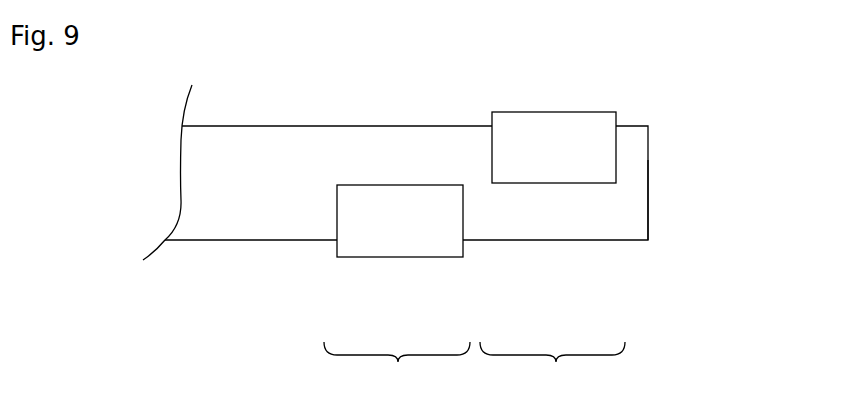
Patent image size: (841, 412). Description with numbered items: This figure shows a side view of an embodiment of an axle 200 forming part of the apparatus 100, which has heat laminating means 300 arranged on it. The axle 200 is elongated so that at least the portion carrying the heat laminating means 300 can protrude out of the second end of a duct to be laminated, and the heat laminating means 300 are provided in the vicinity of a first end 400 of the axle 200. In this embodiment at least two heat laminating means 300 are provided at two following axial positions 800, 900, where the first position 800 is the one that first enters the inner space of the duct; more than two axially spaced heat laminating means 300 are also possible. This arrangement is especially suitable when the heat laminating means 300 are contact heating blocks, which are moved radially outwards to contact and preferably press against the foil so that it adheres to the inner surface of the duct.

The apparatus 100 is at (412, 115).
The axle 200 is at (260, 155).
The heat laminating means 300 is at (553, 128).
The first end 400 is at (650, 184).
The first position 800 is at (552, 369).
The second position 900 is at (397, 369).